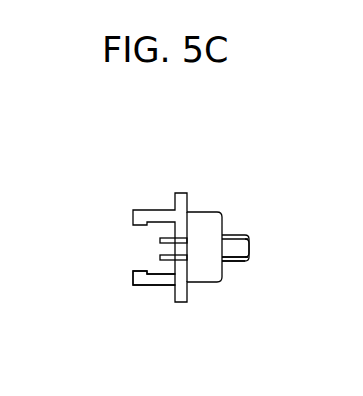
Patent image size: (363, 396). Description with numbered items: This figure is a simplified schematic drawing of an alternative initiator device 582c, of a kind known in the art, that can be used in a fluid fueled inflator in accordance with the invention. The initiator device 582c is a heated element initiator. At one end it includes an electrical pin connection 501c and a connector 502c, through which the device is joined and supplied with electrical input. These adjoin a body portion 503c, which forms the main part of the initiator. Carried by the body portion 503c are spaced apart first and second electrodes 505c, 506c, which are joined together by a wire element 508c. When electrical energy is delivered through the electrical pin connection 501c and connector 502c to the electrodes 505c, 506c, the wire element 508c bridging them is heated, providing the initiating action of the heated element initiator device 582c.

The electrical pin connection 501c is at (146, 248).
The connector 502c is at (152, 284).
The body portion 503c is at (200, 228).
The first electrode 505c is at (238, 233).
The second electrode 506c is at (238, 263).
The wire element 508c is at (249, 249).
The initiator device 582c is at (264, 184).